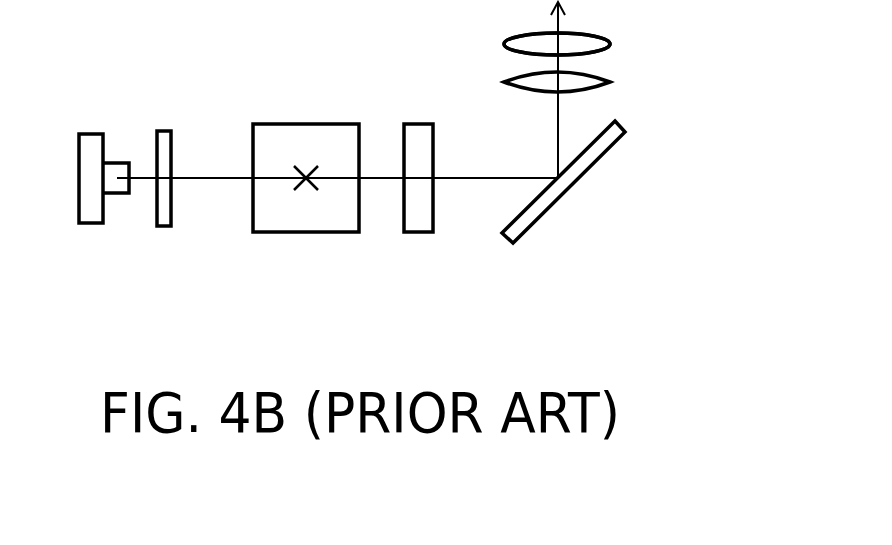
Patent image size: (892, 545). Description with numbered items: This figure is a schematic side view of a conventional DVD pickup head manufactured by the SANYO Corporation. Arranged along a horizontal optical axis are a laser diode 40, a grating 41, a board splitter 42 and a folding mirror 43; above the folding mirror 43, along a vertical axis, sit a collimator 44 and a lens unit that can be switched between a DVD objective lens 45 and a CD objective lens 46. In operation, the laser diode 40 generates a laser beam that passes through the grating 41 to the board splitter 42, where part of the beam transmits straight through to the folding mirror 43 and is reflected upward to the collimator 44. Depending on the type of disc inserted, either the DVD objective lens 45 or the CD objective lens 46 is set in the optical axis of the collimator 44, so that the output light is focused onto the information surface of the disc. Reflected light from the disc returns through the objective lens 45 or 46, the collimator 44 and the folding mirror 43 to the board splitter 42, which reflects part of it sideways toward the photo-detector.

The laser diode 40 is at (86, 223).
The grating 41 is at (160, 226).
The board splitter 42 is at (307, 232).
The folding mirror 43 is at (560, 200).
The collimator 44 is at (610, 85).
The DVD objective lens 45 is at (603, 37).
The CD objective lens 46 is at (557, 44).